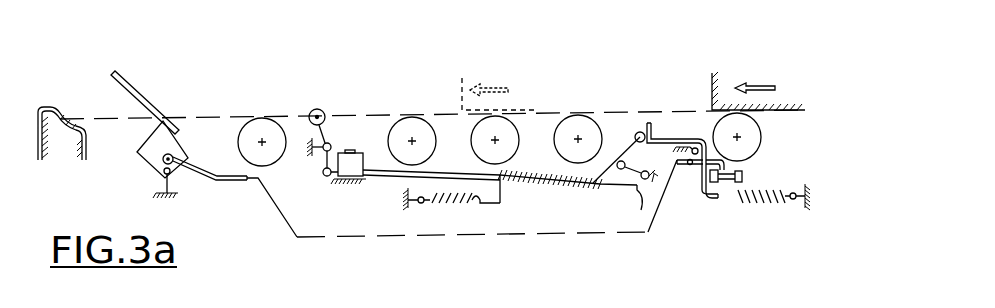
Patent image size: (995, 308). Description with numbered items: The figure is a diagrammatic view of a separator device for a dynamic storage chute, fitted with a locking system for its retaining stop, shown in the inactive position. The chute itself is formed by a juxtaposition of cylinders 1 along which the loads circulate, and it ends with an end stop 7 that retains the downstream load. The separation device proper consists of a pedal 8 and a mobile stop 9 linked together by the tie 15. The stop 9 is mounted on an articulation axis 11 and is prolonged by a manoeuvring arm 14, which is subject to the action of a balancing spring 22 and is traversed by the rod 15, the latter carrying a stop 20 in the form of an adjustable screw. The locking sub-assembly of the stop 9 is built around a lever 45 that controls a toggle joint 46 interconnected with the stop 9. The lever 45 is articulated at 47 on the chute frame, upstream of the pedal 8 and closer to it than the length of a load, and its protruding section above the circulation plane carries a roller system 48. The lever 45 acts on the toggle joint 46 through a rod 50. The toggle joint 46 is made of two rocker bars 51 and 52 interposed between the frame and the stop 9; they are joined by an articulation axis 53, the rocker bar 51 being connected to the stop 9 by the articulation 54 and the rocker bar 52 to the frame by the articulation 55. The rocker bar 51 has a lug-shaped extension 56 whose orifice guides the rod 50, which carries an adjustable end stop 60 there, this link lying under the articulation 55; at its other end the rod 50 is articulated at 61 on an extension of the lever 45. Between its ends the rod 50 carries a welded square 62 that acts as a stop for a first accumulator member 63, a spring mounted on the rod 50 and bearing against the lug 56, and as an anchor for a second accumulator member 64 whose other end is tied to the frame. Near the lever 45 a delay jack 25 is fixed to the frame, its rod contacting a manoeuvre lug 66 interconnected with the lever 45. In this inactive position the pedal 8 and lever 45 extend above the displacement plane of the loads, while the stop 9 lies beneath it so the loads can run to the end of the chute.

The end stop 7 is at (66, 106).
The pedal 8 is at (150, 82).
The cylinders 1 is at (248, 136).
The lever 45 is at (318, 98).
The roller system 48 is at (311, 113).
The articulation 47 is at (324, 149).
The articulation 61 is at (325, 176).
The manoeuvre lug 66 is at (343, 150).
The delay jack 25 is at (347, 188).
The rod 50 is at (390, 178).
The second accumulator member 64 is at (442, 204).
The welded square 62 is at (506, 198).
The first accumulator member 63 is at (532, 175).
The tie 15 is at (515, 237).
The toggle joint 46 is at (623, 120).
The rocker bar 51 is at (626, 140).
The lug-shaped extension 56 is at (601, 186).
The articulation 54 is at (638, 130).
The articulation axis 53 is at (618, 168).
The rocker bar 52 is at (628, 169).
The adjustable end stop 60 is at (641, 210).
The articulation 55 is at (649, 178).
The mobile stop 9 is at (671, 120).
The articulation axis 11 is at (690, 166).
The stop 20 is at (752, 170).
The manoeuvring arm 14 is at (705, 199).
The balancing spring 22 is at (768, 203).